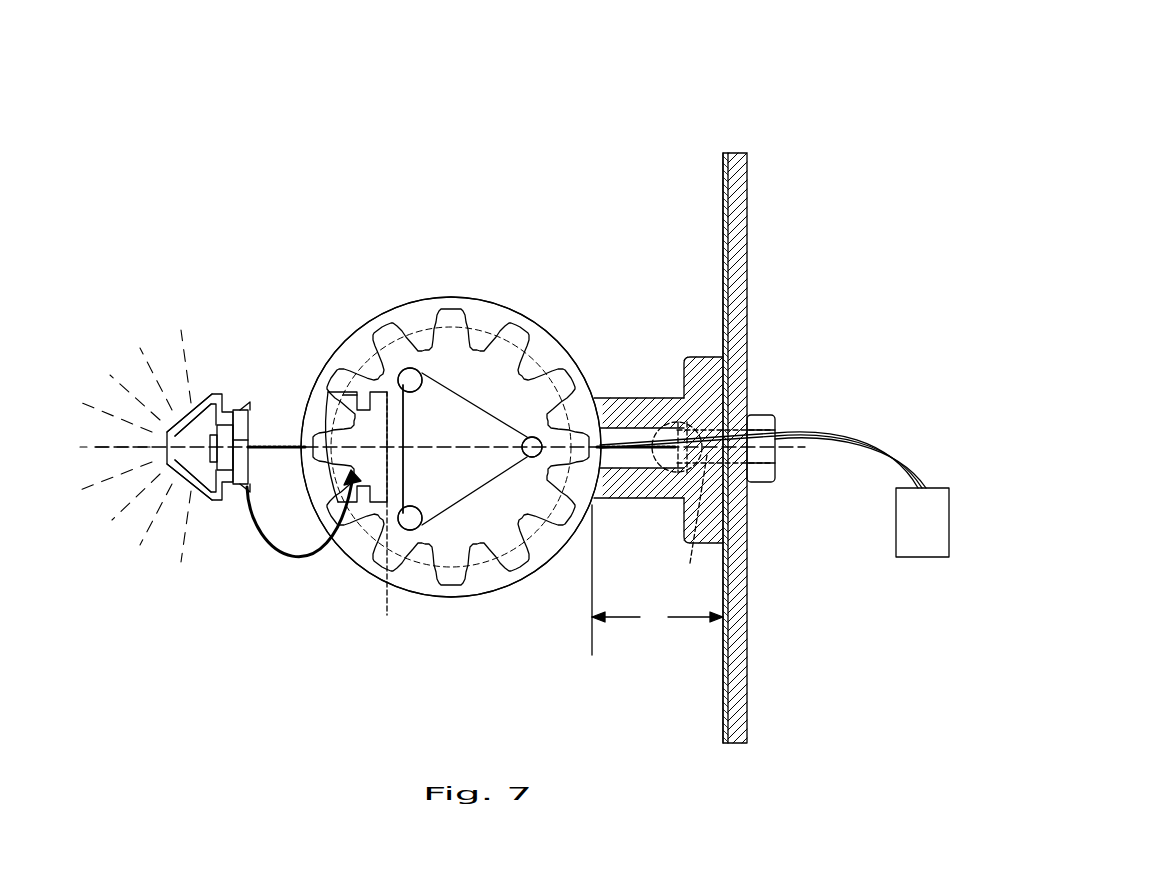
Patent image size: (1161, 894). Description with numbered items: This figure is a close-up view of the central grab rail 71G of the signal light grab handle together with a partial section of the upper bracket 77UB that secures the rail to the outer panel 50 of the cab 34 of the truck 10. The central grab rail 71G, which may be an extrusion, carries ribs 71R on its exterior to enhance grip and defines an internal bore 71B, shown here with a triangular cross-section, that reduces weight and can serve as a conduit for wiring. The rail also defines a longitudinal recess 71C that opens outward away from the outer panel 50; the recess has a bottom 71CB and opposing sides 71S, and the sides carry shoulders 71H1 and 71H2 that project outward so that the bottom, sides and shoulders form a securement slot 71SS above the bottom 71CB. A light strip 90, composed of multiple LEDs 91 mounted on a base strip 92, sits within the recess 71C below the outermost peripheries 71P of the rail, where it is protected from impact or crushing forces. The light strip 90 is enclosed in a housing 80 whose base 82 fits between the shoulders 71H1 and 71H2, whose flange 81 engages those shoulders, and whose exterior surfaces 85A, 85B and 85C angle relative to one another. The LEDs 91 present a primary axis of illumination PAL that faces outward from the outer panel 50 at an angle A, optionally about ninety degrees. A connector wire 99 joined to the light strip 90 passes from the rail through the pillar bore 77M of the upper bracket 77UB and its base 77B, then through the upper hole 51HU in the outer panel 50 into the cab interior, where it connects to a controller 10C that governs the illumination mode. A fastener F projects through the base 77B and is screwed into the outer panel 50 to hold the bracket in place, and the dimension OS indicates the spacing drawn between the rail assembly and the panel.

The truck 10 is at (817, 92).
The cab 34 is at (705, 124).
The outer panel 50 is at (717, 209).
The base 77B is at (705, 356).
The pillar bore 77M is at (700, 430).
The upper hole 51HU is at (735, 426).
The connector wire 99 is at (265, 442).
The central grab rail 71G is at (528, 330).
The opposing sides 71S is at (343, 395).
The outermost peripheries 71P is at (352, 322).
The longitudinal recess 71C is at (343, 550).
The ribs 71R is at (460, 580).
The internal bore 71B is at (465, 475).
The shoulder 71H1 is at (363, 407).
The shoulder 71H2 is at (368, 496).
The bottom 71CB is at (388, 437).
The securement slot 71SS is at (380, 465).
The upper bracket 77UB is at (623, 500).
The housing 80 is at (221, 410).
The flange 81 is at (247, 417).
The base 82 is at (234, 427).
The light strip 90 is at (227, 463).
The base strip 92 is at (228, 440).
The LEDs 91 is at (210, 442).
The exterior surface 85A is at (183, 413).
The exterior surface 85B is at (167, 470).
The exterior surface 85C is at (197, 487).
The primary axis of illumination PAL is at (112, 448).
The angle A is at (714, 305).
The fastener F is at (693, 518).
The offset distance OS is at (657, 580).
The controller 10C is at (912, 558).